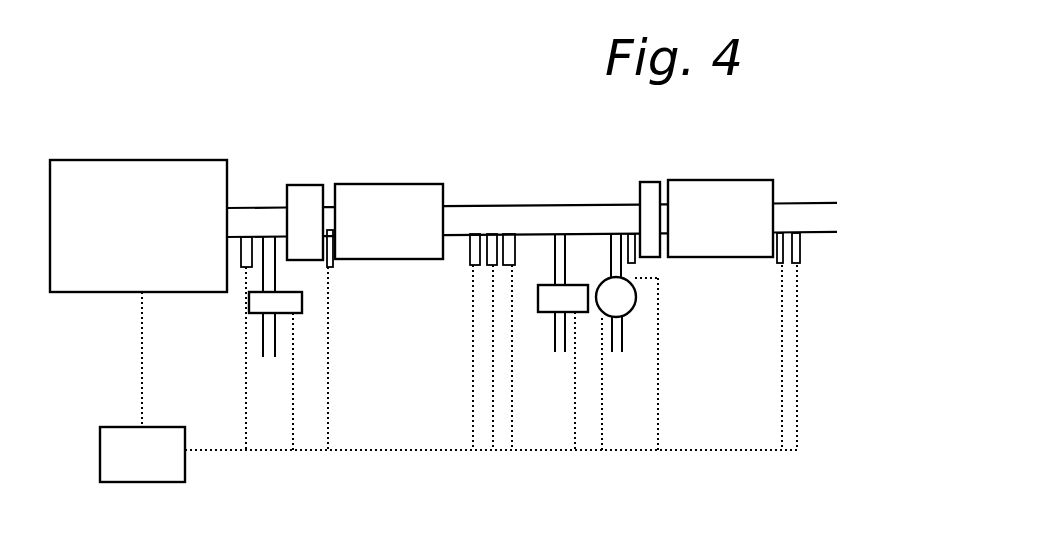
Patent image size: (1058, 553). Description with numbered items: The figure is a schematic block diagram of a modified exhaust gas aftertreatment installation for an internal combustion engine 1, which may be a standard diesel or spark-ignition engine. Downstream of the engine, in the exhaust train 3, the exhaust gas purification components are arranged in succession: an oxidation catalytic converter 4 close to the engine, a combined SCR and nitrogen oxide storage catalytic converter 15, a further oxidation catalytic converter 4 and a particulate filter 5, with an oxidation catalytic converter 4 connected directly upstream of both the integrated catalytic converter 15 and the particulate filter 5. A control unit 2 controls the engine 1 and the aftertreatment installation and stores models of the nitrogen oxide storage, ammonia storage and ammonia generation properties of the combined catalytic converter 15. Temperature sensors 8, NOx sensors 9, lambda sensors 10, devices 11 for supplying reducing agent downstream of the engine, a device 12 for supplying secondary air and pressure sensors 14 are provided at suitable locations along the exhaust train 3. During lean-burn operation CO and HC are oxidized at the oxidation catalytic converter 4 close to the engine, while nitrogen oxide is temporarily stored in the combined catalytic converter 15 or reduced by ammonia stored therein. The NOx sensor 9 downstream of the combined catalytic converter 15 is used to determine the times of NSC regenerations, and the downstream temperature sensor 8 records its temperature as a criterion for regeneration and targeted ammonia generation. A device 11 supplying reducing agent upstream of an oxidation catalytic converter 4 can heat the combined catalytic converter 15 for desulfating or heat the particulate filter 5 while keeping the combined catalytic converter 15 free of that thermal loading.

The internal combustion engine 1 is at (123, 183).
The control unit 2 is at (168, 439).
The exhaust train 3 is at (502, 215).
The oxidation catalytic converter 4 is at (303, 212).
The particulate filter 5 is at (718, 207).
The temperature sensor 8 is at (330, 267).
The NOx sensor 9 is at (516, 265).
The lambda sensor 10 is at (243, 268).
The device for supplying reducing agent 11 is at (288, 302).
The device for supplying secondary air 12 is at (625, 316).
The pressure sensor 14 is at (637, 262).
The combined SCR and nitrogen oxide storage catalytic converter 15 is at (397, 243).